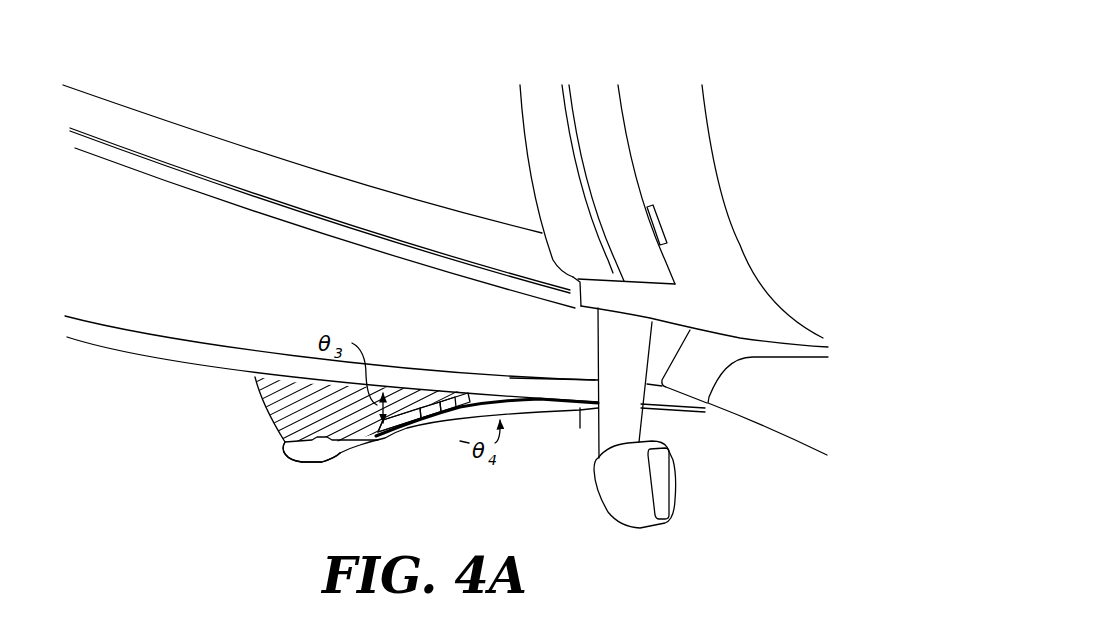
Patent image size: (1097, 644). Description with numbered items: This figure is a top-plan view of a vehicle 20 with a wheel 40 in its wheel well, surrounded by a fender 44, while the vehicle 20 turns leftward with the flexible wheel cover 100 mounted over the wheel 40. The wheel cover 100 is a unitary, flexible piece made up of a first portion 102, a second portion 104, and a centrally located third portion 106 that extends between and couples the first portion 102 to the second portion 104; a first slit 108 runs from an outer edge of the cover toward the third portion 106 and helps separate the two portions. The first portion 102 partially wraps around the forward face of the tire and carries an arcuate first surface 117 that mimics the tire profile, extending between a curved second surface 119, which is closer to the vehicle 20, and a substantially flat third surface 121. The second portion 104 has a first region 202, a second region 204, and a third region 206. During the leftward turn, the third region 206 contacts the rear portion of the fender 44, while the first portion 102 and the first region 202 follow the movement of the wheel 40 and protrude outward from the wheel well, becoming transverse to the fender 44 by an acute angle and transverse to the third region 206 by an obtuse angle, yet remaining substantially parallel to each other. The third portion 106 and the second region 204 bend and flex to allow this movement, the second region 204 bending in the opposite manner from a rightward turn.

The vehicle 20 is at (283, 98).
The wheel cover 100 is at (290, 346).
The wheel 40 is at (290, 397).
The fender 44 is at (465, 385).
The second surface 119 is at (280, 450).
The first portion 102 is at (295, 458).
The first surface 117 is at (330, 456).
The first slit 108 is at (395, 438).
The third surface 121 is at (410, 433).
The first region 202 is at (421, 430).
The third portion 106 is at (457, 421).
The second region 204 is at (523, 407).
The second portion 104 is at (693, 413).
The third region 206 is at (589, 405).